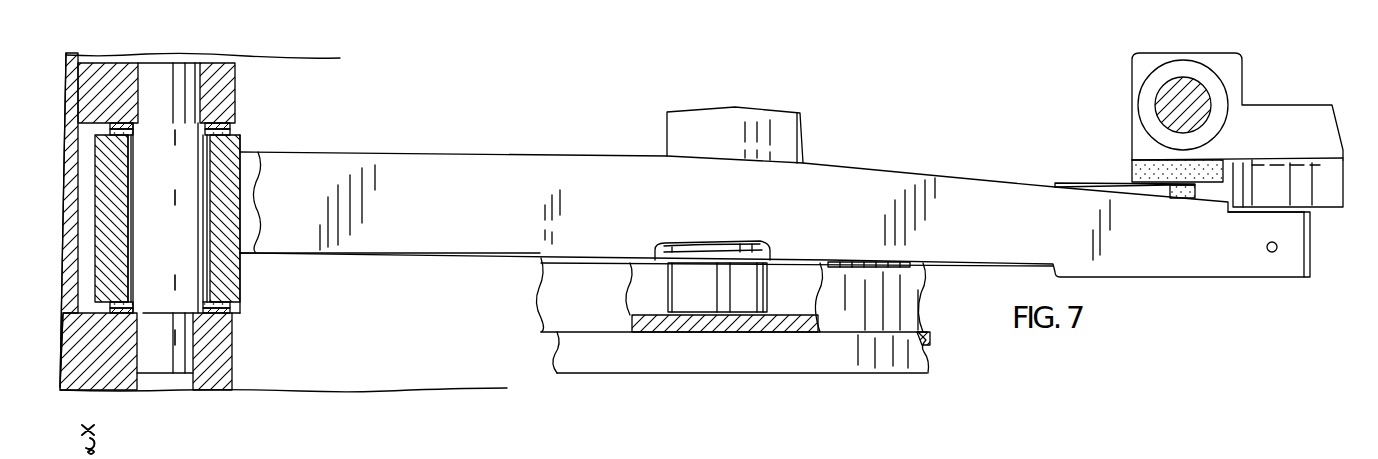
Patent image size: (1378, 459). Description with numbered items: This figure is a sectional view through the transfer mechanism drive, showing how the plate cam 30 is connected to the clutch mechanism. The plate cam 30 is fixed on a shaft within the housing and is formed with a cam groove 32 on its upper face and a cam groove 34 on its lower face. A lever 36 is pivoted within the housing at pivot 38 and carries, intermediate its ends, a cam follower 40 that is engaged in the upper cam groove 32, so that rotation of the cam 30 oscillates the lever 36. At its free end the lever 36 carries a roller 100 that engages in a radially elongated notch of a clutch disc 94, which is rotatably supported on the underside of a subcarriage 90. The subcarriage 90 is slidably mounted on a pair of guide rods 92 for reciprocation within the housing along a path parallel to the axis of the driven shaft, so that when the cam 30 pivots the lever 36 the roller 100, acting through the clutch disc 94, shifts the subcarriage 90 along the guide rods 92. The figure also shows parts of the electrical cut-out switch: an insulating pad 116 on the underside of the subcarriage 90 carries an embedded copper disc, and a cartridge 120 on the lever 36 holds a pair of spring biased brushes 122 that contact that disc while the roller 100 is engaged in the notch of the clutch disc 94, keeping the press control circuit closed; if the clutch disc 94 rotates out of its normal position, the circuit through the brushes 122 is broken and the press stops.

The plate cam 30 is at (908, 313).
The cam groove 32 is at (645, 275).
The cam groove 34 is at (665, 363).
The lever 36 is at (588, 161).
The pivot 38 is at (196, 163).
The cam follower 40 is at (769, 277).
The subcarriage 90 is at (1243, 85).
The guide rods 92 is at (1163, 101).
The clutch disc 94 is at (1327, 200).
The roller 100 is at (1226, 212).
The insulating pad 116 is at (1148, 160).
The cartridge 120 is at (1110, 182).
The brushes 122 is at (1172, 196).